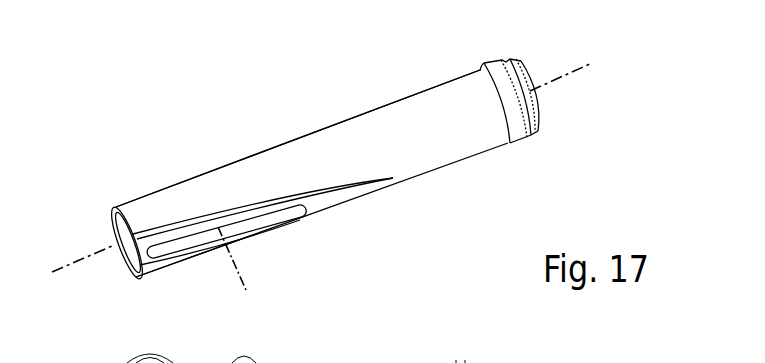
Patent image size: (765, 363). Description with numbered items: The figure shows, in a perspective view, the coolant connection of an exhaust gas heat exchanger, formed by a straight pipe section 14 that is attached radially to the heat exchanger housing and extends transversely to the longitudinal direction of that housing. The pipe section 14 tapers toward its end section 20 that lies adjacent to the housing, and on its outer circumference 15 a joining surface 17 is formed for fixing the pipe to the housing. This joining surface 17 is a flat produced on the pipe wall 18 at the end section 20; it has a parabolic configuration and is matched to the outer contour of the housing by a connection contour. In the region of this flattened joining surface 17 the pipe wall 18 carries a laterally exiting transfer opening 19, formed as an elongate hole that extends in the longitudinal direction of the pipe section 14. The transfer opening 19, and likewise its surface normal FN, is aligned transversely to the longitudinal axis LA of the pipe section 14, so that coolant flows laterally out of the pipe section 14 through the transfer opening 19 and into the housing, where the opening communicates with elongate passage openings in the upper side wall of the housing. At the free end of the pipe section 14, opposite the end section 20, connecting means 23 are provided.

The pipe section 14 is at (410, 97).
The outer circumference 15 is at (256, 170).
The joining surface 17 is at (166, 266).
The pipe wall 18 is at (332, 172).
The transfer opening 19 is at (275, 218).
The end section 20 is at (141, 194).
The connecting means 23 is at (524, 143).
The longitudinal axis LA is at (592, 63).
The surface normal FN is at (246, 290).